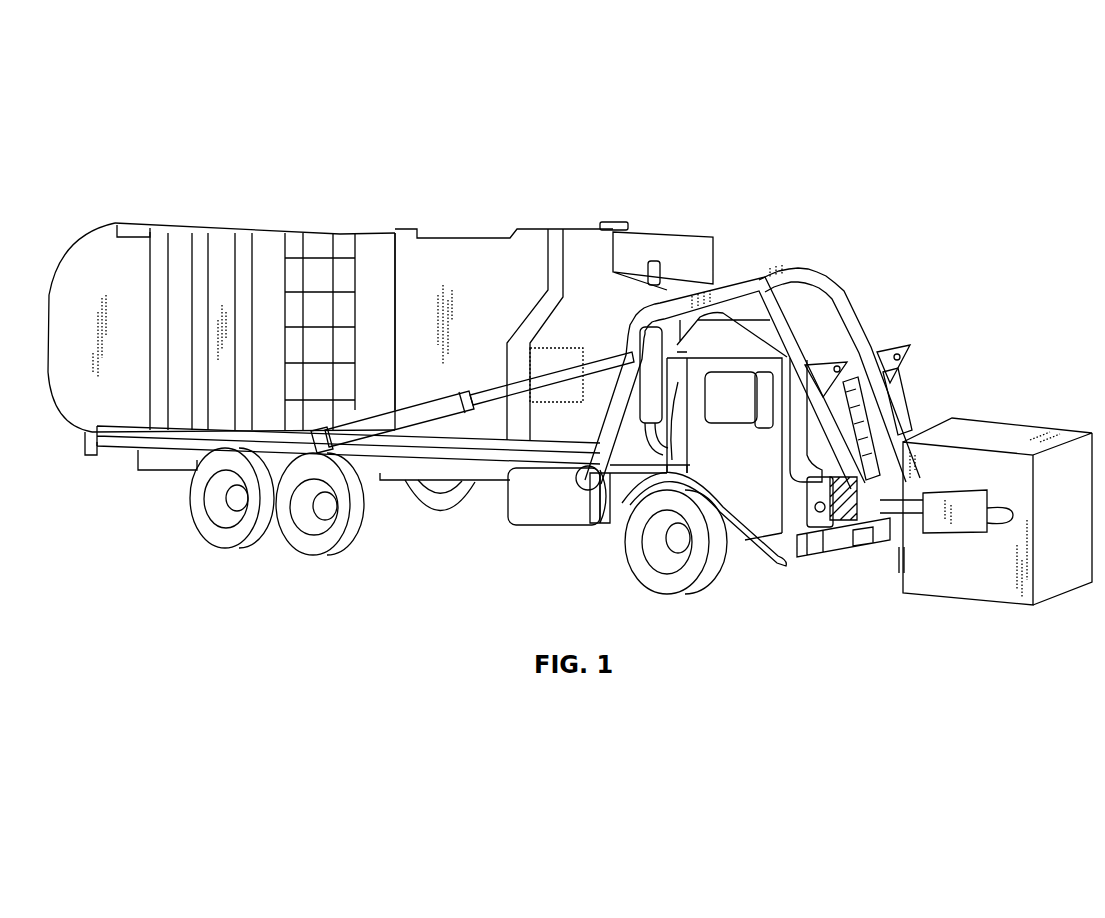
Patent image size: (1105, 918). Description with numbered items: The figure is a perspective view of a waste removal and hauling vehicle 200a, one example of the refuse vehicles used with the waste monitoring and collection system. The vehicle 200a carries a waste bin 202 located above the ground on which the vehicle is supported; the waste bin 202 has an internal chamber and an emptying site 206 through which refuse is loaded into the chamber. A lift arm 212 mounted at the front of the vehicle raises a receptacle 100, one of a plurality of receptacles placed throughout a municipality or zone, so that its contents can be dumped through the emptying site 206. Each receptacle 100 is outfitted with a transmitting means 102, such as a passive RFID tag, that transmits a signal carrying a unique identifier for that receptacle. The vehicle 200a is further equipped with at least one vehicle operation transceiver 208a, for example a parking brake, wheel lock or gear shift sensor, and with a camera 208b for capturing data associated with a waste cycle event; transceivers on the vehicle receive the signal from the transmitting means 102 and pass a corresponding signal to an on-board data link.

The waste removal and hauling vehicle 200a is at (152, 81).
The waste bin 202 is at (275, 237).
The emptying site 206 is at (583, 173).
The vehicle operation transceiver 208a is at (853, 550).
The camera 208b is at (630, 226).
The lift arm 212 is at (850, 300).
The receptacle 100 is at (1002, 432).
The transmitting means 102 is at (896, 574).